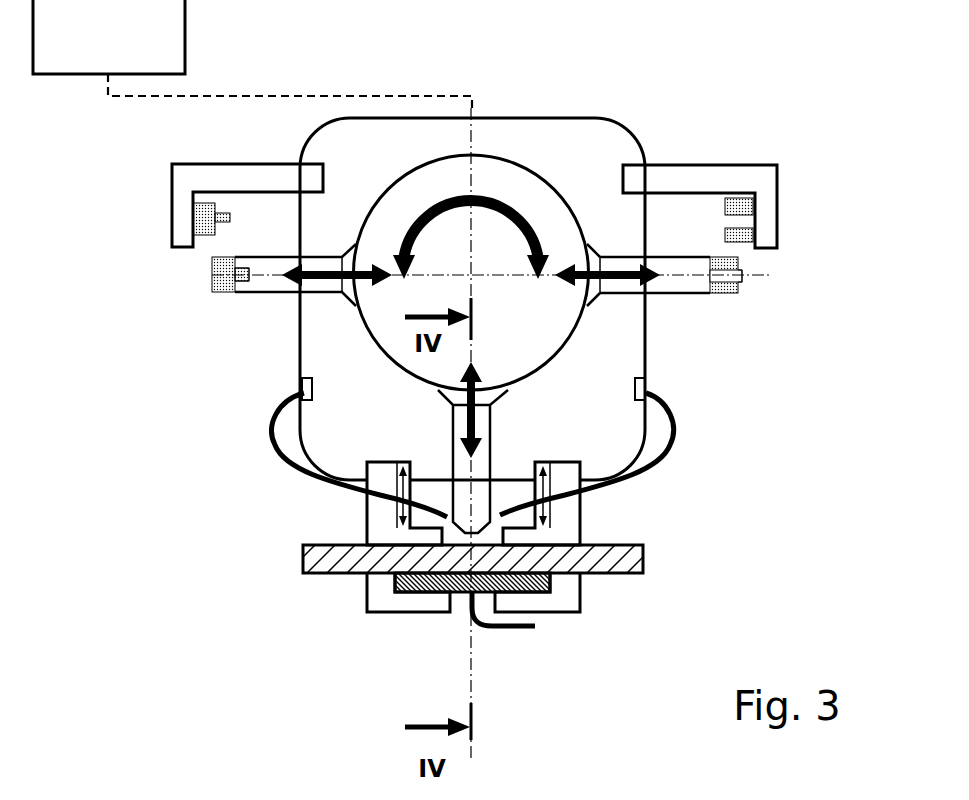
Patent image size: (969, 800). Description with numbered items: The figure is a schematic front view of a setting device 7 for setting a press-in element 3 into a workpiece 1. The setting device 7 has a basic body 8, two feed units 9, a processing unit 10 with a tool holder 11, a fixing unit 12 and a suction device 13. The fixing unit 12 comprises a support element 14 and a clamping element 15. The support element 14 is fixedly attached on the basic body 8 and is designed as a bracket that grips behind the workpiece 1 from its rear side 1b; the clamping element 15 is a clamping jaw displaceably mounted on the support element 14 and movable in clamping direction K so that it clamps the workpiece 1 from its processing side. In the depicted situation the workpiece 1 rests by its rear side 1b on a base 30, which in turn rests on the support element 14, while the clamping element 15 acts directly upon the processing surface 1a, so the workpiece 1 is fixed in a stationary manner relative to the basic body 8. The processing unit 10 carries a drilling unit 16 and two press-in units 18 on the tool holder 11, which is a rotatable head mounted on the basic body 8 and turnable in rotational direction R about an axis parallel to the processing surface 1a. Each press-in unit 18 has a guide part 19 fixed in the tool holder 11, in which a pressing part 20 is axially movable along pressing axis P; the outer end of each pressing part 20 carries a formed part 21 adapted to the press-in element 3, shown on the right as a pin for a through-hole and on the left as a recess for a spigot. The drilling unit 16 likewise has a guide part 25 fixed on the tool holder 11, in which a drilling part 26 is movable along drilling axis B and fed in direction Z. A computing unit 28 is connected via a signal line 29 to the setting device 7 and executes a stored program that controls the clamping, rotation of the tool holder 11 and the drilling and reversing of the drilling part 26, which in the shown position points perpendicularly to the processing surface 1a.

The workpiece 1 is at (645, 568).
The processing surface 1a is at (625, 538).
The rear side 1b is at (630, 575).
The press-in element 3 is at (205, 236).
The setting device 7 is at (768, 385).
The basic body 8 is at (537, 118).
The feed unit 9 is at (172, 217).
The processing unit 10 is at (548, 148).
The tool holder 11 is at (407, 175).
The fixing unit 12 is at (352, 527).
The suction device 13 is at (672, 425).
The support element 14 is at (380, 613).
The clamping element 15 is at (548, 466).
The drilling unit 16 is at (440, 450).
The press-in unit 18 is at (248, 298).
The guide part 19 is at (340, 250).
The pressing part 20 is at (325, 295).
The formed part 21 is at (249, 265).
The guide part 25 is at (500, 400).
The drilling part 26 is at (493, 448).
The computing unit 28 is at (185, 44).
The signal line 29 is at (385, 96).
The base 30 is at (462, 593).